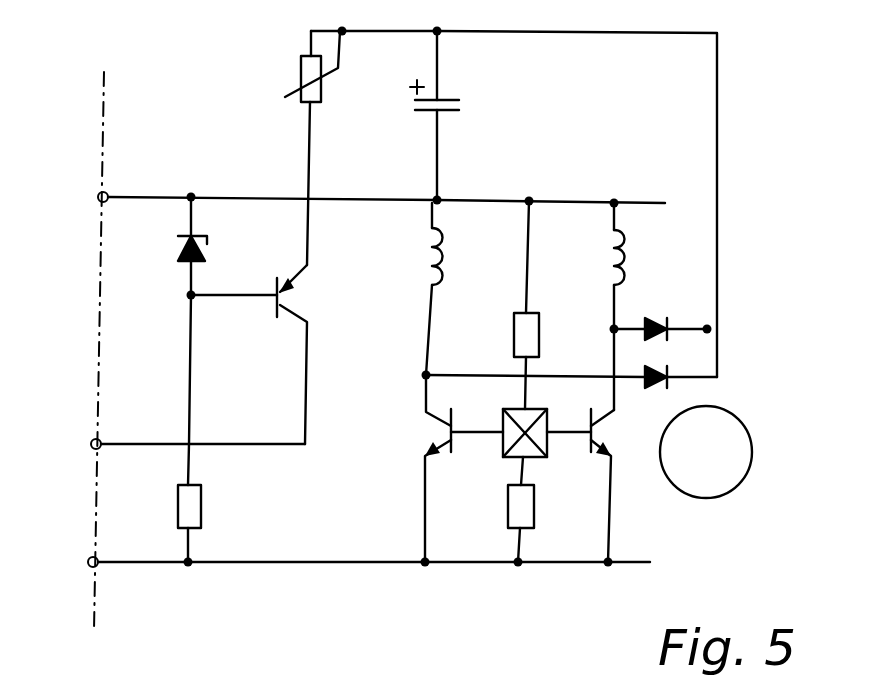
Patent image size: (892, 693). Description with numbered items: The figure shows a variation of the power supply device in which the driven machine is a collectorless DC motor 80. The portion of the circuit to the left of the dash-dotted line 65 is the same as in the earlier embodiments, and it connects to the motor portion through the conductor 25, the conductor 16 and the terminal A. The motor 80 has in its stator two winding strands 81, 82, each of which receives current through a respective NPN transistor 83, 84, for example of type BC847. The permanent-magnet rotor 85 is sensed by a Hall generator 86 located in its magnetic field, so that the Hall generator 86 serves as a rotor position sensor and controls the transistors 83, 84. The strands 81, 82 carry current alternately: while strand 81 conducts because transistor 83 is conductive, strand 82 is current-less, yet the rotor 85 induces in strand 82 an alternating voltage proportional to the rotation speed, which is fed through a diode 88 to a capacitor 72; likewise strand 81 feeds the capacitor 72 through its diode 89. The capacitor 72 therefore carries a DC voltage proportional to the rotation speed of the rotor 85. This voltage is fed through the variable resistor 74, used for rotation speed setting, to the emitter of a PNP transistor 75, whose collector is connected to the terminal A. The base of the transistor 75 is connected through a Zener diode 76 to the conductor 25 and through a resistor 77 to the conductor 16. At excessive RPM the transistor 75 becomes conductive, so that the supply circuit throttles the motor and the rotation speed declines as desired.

The dash-dotted line 65 is at (106, 107).
The conductor 25 is at (97, 200).
The variable resistor 74 is at (299, 76).
The capacitor 72 is at (470, 100).
The Zener diode 76 is at (180, 255).
The PNP transistor 75 is at (284, 282).
The winding strand 81 is at (425, 280).
The collectorless DC motor 80 is at (507, 312).
The winding strand 82 is at (624, 262).
The diode 88 is at (657, 312).
The diode 89 is at (655, 395).
The permanent-magnet rotor 85 is at (733, 410).
The NPN transistor 83 is at (437, 440).
The Hall generator 86 is at (502, 447).
The NPN transistor 84 is at (583, 440).
The resistor 77 is at (178, 512).
The terminal A is at (90, 446).
The conductor 16 is at (90, 566).